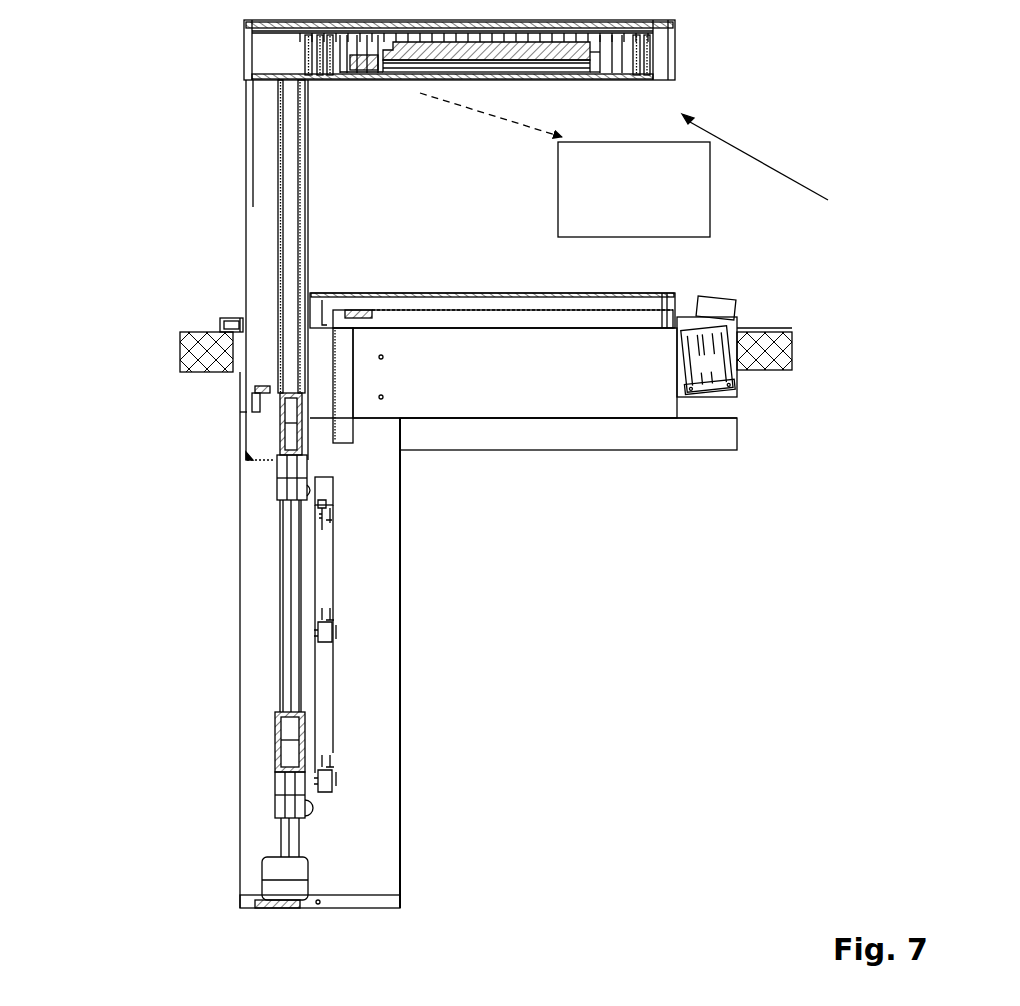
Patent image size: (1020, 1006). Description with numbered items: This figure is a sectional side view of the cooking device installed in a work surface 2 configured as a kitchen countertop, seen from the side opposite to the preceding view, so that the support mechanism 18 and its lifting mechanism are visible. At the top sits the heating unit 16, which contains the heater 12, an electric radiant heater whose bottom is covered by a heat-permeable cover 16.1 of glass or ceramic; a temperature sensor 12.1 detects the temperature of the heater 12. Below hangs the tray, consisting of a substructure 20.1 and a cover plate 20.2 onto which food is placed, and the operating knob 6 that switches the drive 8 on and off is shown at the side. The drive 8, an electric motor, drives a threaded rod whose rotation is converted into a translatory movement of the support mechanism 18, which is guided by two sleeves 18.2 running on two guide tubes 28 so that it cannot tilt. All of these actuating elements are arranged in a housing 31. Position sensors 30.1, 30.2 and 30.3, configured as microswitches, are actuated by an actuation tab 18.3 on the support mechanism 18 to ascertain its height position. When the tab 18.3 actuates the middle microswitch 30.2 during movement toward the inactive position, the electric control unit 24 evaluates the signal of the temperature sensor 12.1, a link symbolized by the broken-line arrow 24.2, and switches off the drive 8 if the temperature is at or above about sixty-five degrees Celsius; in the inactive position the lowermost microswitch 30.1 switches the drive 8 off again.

The work surface 2 is at (777, 347).
The operating element 6 is at (737, 306).
The drive 8 is at (295, 883).
The heater 12 is at (773, 163).
The temperature sensor 12.1 is at (420, 78).
The heating unit 16 is at (660, 34).
The cover 16.1 is at (590, 76).
The support mechanism 18 is at (272, 102).
The sleeves 18.2 is at (290, 490).
The actuation tab 18.3 is at (333, 493).
The substructure 20.1 is at (560, 380).
The cover plate 20.2 is at (600, 292).
The electric control unit 24 is at (560, 182).
The broken-line arrow 24.2 is at (505, 114).
The guide tubes 28 is at (292, 660).
The position sensor 30.1 is at (333, 783).
The position sensor 30.2 is at (327, 625).
The position sensor 30.3 is at (327, 502).
The housing 31 is at (693, 450).